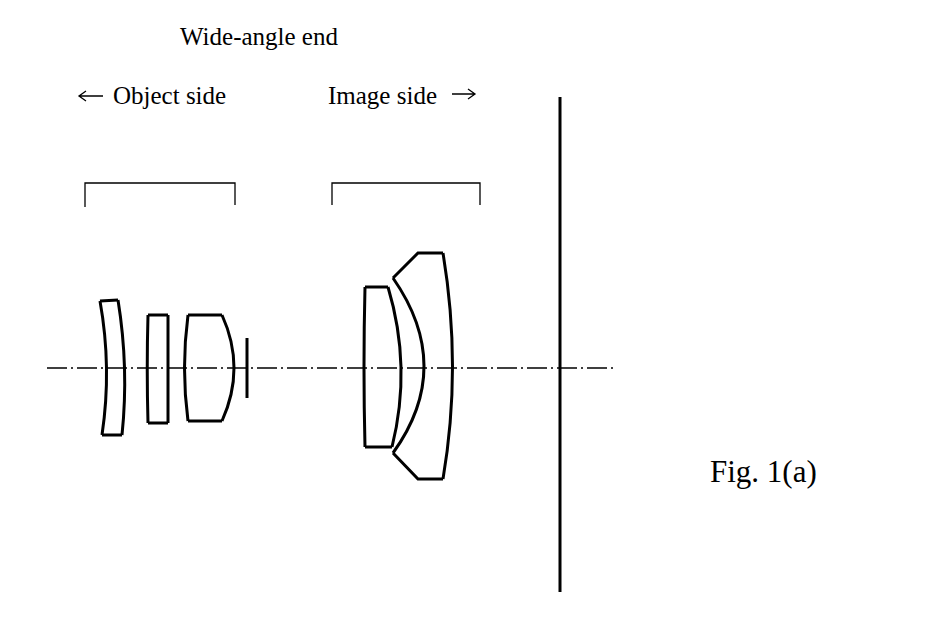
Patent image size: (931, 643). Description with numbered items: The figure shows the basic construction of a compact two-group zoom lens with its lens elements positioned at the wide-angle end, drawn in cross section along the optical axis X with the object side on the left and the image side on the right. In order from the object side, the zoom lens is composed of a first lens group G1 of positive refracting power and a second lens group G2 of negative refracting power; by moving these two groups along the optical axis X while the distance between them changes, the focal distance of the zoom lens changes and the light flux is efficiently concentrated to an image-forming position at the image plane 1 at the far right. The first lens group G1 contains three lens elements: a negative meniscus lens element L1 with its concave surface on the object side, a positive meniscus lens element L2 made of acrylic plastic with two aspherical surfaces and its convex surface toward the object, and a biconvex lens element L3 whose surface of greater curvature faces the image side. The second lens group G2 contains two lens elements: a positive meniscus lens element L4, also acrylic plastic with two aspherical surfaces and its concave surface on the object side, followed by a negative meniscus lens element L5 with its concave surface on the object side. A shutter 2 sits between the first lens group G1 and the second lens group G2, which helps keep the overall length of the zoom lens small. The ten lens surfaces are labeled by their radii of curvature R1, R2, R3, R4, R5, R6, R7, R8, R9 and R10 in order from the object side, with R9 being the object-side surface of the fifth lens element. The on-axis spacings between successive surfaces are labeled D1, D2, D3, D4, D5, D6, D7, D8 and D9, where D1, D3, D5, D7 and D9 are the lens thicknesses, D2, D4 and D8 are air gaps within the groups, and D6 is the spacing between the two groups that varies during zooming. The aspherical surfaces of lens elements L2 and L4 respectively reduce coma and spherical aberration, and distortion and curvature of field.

The image plane 1 is at (559, 125).
The shutter 2 is at (249, 338).
The optical axis X is at (57, 372).
The first lens group G1 is at (160, 181).
The second lens group G2 is at (406, 180).
The negative meniscus lens element L1 is at (99, 336).
The positive meniscus lens element L2 is at (137, 332).
The biconvex lens element L3 is at (227, 369).
The positive meniscus lens element L4 is at (355, 363).
The negative meniscus lens element L5 is at (453, 365).
The radius of curvature of object-side surface of first lens element R1 is at (100, 305).
The radius of curvature of image-side surface of first lens element R2 is at (126, 337).
The radius of curvature of object-side surface of second lens element R3 is at (148, 342).
The radius of curvature of image-side surface of second lens element R4 is at (175, 330).
The radius of curvature of object-side surface of third lens element R5 is at (177, 413).
The radius of curvature of image-side surface of third lens element R6 is at (237, 412).
The radius of curvature of object-side surface of fourth lens element R7 is at (365, 427).
The radius of curvature of image-side surface of fourth lens element R8 is at (395, 443).
The radius of curvature of object-side surface of fifth lens element R9 is at (415, 465).
The radius of curvature of image-side surface of fifth lens element R10 is at (457, 448).
The on-axis spacing D1 is at (108, 393).
The on-axis spacing D2 is at (133, 385).
The on-axis spacing D3 is at (160, 387).
The on-axis spacing D4 is at (177, 373).
The on-axis spacing D5 is at (211, 360).
The on-axis spacing D6 is at (297, 359).
The on-axis spacing D7 is at (386, 360).
The on-axis spacing D8 is at (422, 360).
The on-axis spacing D9 is at (457, 353).